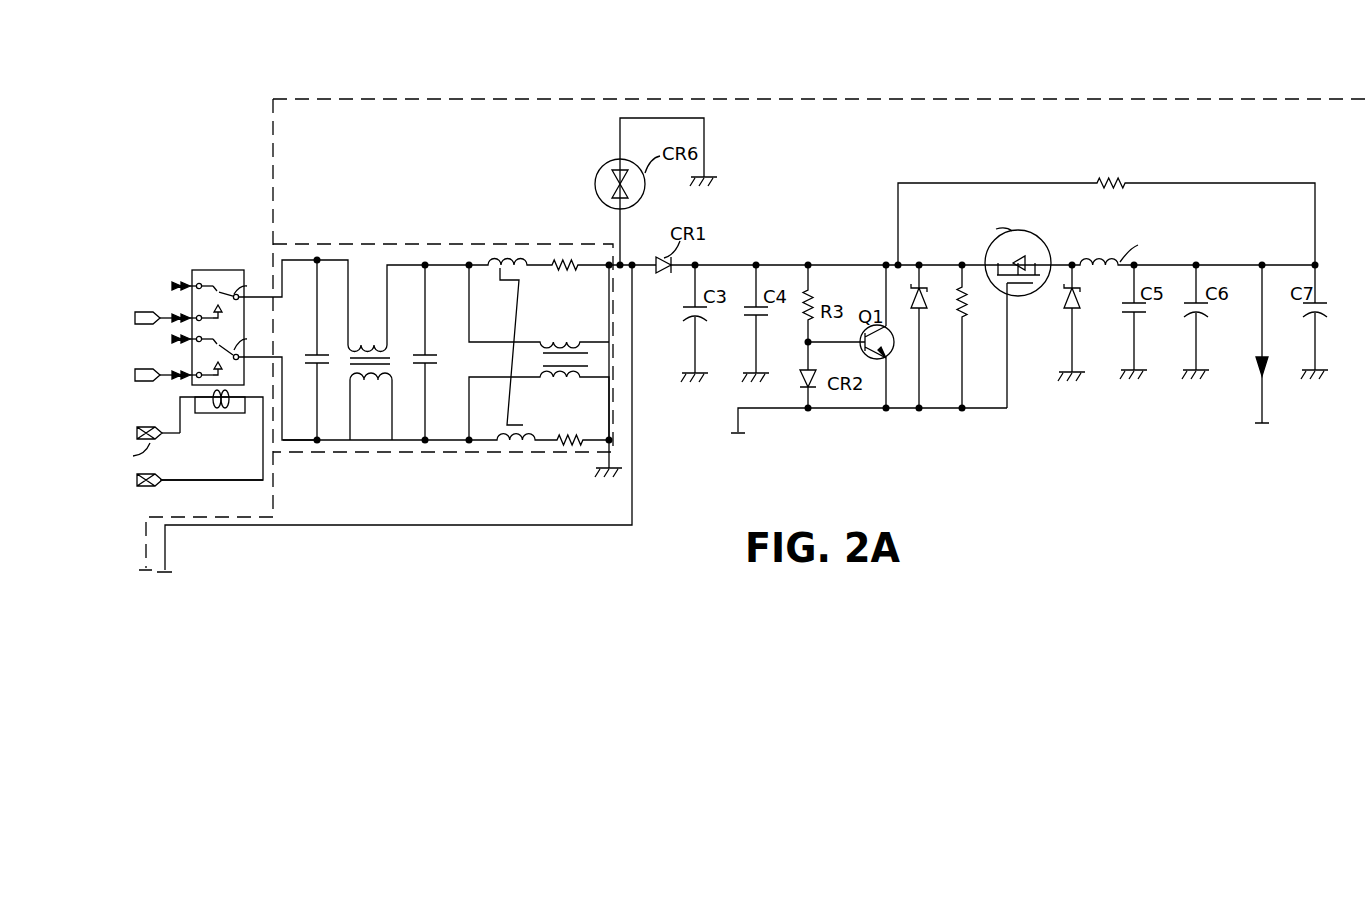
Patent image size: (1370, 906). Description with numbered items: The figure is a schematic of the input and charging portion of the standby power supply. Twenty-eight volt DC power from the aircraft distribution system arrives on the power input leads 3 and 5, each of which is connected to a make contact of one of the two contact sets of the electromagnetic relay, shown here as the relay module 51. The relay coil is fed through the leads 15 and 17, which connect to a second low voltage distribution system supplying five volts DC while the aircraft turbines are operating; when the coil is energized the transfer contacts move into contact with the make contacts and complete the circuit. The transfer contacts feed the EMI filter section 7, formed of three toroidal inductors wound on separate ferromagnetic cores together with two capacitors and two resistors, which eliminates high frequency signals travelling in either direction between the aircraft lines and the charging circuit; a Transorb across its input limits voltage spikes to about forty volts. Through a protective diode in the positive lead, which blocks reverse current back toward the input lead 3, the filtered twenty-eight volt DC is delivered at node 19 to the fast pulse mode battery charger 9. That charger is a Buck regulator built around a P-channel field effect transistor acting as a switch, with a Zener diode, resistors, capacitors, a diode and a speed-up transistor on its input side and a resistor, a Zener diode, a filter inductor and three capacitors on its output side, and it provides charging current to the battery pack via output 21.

The relay switch module 51 is at (217, 269).
The power input 3 is at (137, 311).
The power input 5 is at (134, 366).
The EMI filter section 7 is at (418, 240).
The fast pulse mode battery charger 9 is at (842, 236).
The lead to the electromagnetic coil of relay S1 15 is at (179, 406).
The lead to the electromagnetic coil of relay S1 17 is at (225, 484).
The node 19 is at (638, 270).
The output 21 is at (1258, 395).